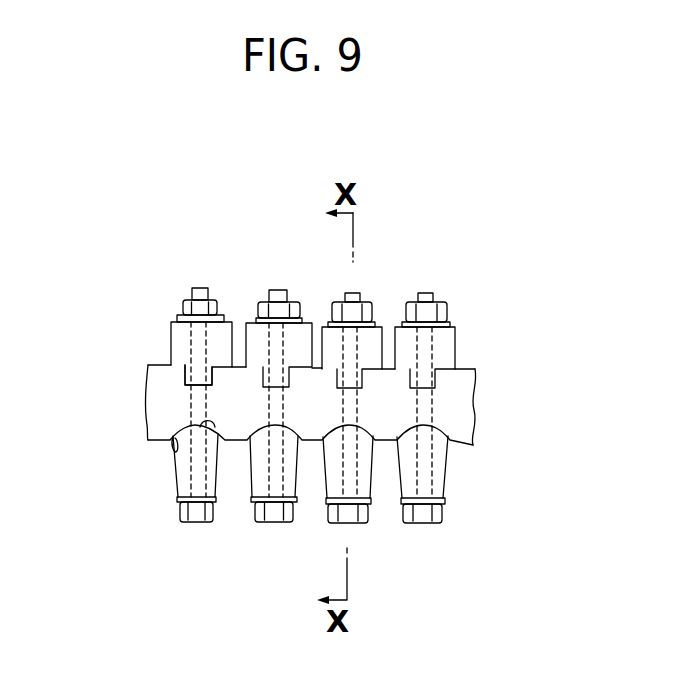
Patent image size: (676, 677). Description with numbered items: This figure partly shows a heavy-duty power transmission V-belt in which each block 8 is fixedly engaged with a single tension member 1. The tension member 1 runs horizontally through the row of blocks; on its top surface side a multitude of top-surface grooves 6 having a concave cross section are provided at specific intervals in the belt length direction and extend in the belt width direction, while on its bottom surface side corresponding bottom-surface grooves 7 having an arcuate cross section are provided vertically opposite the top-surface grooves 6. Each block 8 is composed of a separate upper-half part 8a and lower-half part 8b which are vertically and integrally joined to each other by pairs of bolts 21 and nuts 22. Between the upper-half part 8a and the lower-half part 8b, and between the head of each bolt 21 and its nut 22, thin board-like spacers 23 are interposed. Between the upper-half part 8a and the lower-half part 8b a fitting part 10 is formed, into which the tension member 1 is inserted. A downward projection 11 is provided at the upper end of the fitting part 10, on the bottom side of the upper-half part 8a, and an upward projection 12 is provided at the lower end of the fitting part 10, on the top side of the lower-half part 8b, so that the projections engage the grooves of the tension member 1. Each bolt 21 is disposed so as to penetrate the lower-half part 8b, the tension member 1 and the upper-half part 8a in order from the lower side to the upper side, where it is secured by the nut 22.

The tension member 1 is at (481, 408).
The top-surface groove 6 is at (192, 377).
The bottom-surface groove 7 is at (175, 442).
The block 8 is at (313, 393).
The upper-half part 8a is at (457, 338).
The lower-half part 8b is at (450, 467).
The fitting part 10 is at (178, 367).
The downward projection 11 is at (208, 391).
The upward projection 12 is at (213, 428).
The bolt 21 is at (197, 523).
The nut 22 is at (215, 298).
The spacer 23 is at (177, 318).